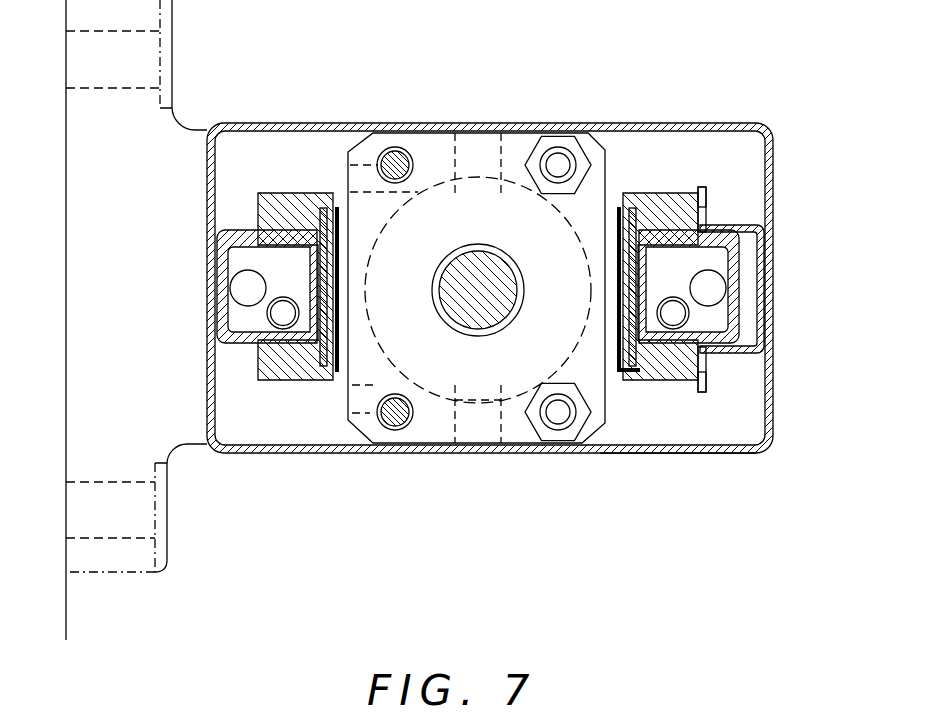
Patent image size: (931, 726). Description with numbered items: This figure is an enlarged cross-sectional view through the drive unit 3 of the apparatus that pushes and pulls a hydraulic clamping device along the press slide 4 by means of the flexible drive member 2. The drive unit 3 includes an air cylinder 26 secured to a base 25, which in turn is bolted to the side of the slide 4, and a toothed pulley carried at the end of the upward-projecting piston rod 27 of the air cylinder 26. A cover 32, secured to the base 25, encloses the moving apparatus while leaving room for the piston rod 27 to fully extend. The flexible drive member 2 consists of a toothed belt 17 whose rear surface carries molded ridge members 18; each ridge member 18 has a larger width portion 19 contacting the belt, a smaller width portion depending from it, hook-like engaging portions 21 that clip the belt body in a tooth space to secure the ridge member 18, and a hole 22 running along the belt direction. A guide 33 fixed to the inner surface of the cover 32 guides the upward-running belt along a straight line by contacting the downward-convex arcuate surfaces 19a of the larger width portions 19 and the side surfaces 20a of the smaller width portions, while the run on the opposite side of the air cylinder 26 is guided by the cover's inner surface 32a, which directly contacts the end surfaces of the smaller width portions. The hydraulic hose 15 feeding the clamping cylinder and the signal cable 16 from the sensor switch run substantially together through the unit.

The flexible drive member 2 is at (652, 197).
The drive unit 3 is at (582, 220).
The slide 4 is at (70, 604).
The hose 15 is at (720, 248).
The signal cable 16 is at (642, 383).
The toothed belt 17 is at (300, 360).
The ridge member 18 is at (278, 387).
The larger width portion 19 is at (679, 206).
The arcuate surface 19a is at (705, 187).
The side surfaces 20a is at (733, 230).
The engaging portions 21 is at (330, 193).
The hole 22 is at (707, 333).
The base 25 is at (197, 128).
The air cylinder 26 is at (438, 180).
The piston rod 27 is at (483, 275).
The cover 32 is at (758, 453).
The inner surface 32a is at (226, 387).
The guide 33 is at (707, 388).